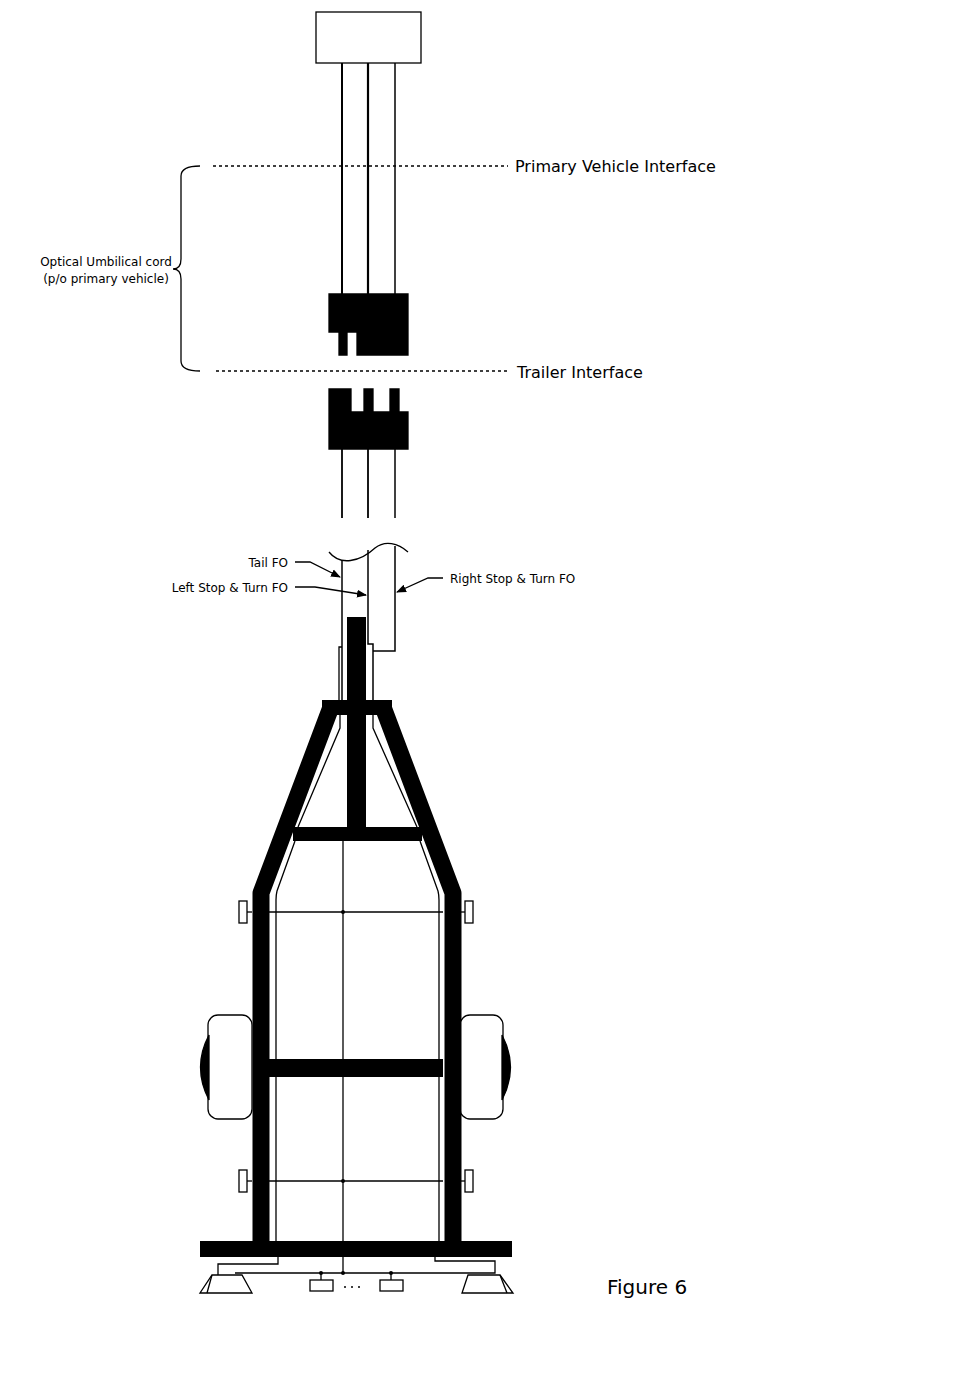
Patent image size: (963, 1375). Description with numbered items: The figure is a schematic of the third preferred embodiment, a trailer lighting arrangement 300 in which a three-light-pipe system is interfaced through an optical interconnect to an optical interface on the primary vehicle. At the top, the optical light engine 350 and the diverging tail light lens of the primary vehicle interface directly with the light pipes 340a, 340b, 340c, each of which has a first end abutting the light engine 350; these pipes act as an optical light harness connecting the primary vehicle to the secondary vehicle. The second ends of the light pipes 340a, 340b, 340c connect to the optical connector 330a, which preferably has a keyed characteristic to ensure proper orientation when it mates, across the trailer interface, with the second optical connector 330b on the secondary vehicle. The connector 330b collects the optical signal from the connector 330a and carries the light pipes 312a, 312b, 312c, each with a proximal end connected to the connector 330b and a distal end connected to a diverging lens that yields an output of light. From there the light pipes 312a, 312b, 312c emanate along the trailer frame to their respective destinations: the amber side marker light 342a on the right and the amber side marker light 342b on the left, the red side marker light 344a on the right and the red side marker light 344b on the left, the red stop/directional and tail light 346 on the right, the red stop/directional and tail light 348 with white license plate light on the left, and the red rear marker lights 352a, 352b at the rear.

The trailer fiber optic lighting system 300 is at (578, 527).
The optical light engine 350 is at (389, 37).
The light pipe 340a is at (398, 139).
The light pipe 340b is at (365, 114).
The light pipe 340c is at (339, 139).
The optical connector 330a is at (400, 324).
The second optical connector 330b is at (401, 419).
The light pipe 312a is at (397, 507).
The light pipe 312b is at (370, 491).
The light pipe 312c is at (340, 507).
The amber side marker light 342a is at (491, 912).
The amber side marker light 342b is at (219, 912).
The red side marker light 344a is at (491, 1181).
The red side marker light 344b is at (219, 1181).
The red stop/directional and tail light 346 is at (487, 1294).
The red stop/directional and tail light with white license plate light 348 is at (226, 1297).
The red rear marker light 352a is at (345, 1295).
The red rear marker light 352b is at (391, 1281).